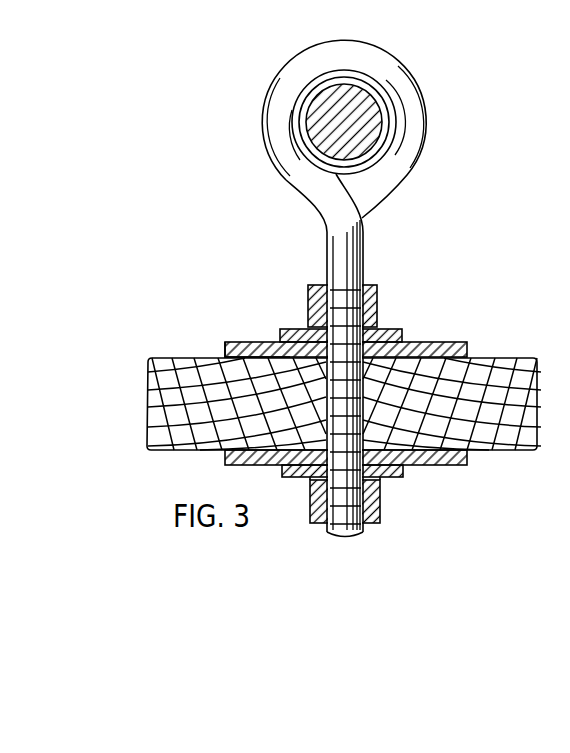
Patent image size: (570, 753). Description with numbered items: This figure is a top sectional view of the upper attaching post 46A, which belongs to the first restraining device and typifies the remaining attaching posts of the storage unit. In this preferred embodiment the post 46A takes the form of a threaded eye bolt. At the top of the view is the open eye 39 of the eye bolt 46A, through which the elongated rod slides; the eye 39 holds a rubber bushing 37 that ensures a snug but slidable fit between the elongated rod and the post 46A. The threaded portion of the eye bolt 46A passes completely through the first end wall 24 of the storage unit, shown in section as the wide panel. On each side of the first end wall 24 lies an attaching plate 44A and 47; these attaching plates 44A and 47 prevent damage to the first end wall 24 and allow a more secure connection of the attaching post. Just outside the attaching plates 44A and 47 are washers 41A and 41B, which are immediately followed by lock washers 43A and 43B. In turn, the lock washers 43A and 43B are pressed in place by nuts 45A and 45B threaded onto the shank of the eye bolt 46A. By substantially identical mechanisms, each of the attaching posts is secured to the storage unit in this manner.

The first end wall 24 is at (163, 367).
The rubber bushing 37 is at (327, 87).
The eye 39 is at (383, 97).
The washer 41A is at (403, 340).
The washer 41B is at (403, 472).
The lock washer 43A is at (373, 328).
The lock washer 43B is at (380, 482).
The attaching plate 44A is at (227, 353).
The nut 45A is at (377, 287).
The nut 45B is at (373, 520).
The upper attaching post 46A is at (338, 252).
The attaching plate 47 is at (462, 455).